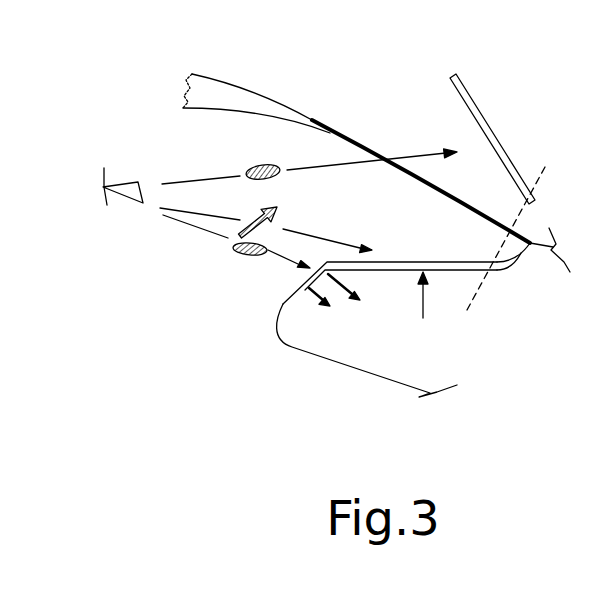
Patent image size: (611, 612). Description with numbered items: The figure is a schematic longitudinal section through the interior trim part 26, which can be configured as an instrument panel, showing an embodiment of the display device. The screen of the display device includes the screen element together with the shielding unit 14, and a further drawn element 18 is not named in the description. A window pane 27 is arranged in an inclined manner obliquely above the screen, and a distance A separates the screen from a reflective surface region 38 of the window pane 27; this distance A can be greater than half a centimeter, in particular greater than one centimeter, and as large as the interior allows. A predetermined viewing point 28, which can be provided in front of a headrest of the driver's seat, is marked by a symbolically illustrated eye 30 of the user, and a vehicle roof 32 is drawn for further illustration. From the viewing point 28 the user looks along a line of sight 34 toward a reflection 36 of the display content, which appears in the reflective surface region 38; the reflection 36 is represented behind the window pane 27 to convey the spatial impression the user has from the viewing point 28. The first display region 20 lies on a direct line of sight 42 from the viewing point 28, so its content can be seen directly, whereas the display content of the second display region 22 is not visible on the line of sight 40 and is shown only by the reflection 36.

The shielding unit 14 is at (418, 262).
The first air flow 18 is at (337, 279).
The first display region 20 is at (314, 291).
The second display region 22 is at (422, 310).
The interior trim part 26 is at (277, 318).
The window pane 27 is at (331, 124).
The viewing point 28 is at (104, 168).
The eye 30 is at (129, 183).
The vehicle roof 32 is at (237, 85).
The line of sight 34 is at (193, 180).
The reflection 36 is at (478, 110).
The reflective surface region 38 is at (330, 142).
The line of sight 40 is at (190, 210).
The direct line of sight 42 is at (202, 227).
The distance A is at (518, 250).